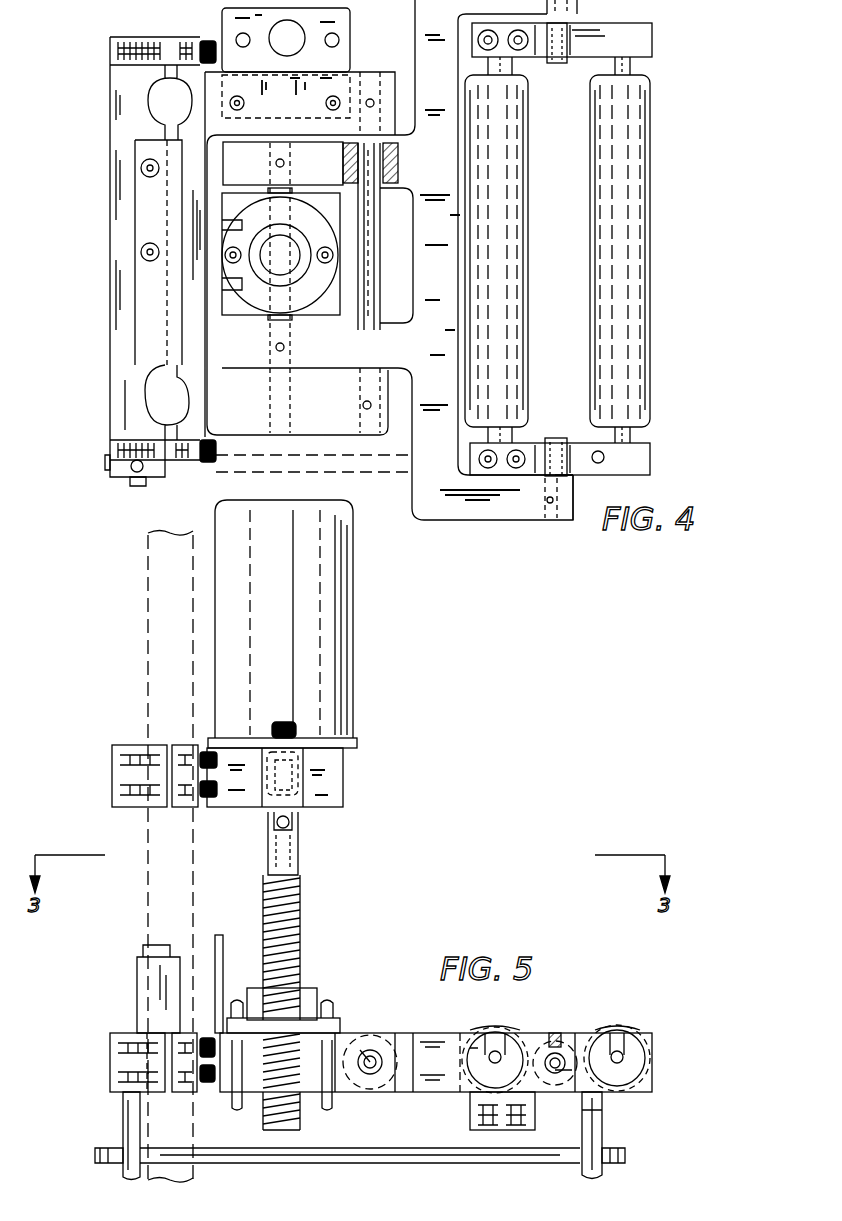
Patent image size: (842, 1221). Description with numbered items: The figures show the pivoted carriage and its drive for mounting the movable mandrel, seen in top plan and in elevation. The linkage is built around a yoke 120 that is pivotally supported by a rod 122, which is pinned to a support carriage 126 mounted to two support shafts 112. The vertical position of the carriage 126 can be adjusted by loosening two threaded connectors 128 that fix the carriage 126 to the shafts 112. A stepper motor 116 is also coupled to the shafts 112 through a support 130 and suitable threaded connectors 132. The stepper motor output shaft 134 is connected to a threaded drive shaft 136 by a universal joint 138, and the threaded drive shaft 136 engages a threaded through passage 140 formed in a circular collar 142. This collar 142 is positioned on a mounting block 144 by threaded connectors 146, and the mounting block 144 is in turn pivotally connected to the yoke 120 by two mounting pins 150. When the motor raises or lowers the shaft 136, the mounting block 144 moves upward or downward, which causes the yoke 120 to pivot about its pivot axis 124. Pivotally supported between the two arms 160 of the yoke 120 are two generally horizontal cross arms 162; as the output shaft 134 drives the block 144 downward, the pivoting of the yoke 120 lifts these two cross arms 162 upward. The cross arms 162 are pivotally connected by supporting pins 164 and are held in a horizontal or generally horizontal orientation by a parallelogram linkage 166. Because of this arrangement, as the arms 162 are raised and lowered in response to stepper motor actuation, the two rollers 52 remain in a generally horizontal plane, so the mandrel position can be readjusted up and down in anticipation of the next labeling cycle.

In FIG. 4, the rollers 52 is at (510, 257).
In FIG. 5, the rollers 52 is at (500, 1030).
In FIG. 5, the support shafts 112 is at (170, 613).
In FIG. 5, the stepper motor 116 is at (315, 595).
In FIG. 4, the yoke 120 is at (417, 507).
In FIG. 4, the rod 122 is at (400, 183).
In FIG. 4, the pivot axis 124 is at (122, 303).
In FIG. 5, the pivot axis 124 is at (395, 1036).
In FIG. 4, the support carriage 126 is at (312, 84).
In FIG. 4, the threaded connectors 128 is at (204, 45).
In FIG. 5, the threaded connectors 128 is at (200, 1040).
In FIG. 5, the support 130 is at (325, 780).
In FIG. 5, the threaded connectors 132 is at (213, 742).
In FIG. 5, the stepper motor output shaft 134 is at (340, 765).
In FIG. 5, the threaded drive shaft 136 is at (303, 938).
In FIG. 5, the universal joint 138 is at (302, 822).
In FIG. 4, the threaded through passage 140 is at (295, 250).
In FIG. 4, the circular collar 142 is at (300, 300).
In FIG. 4, the mounting block 144 is at (340, 305).
In FIG. 4, the threaded connectors 146 is at (335, 256).
In FIG. 5, the threaded connectors 146 is at (328, 1016).
In FIG. 4, the mounting pins 150 is at (275, 180).
In FIG. 4, the arms 160 is at (565, 505).
In FIG. 4, the cross arms 162 is at (640, 42).
In FIG. 4, the supporting pins 164 is at (560, 63).
In FIG. 5, the parallelogram linkage 166 is at (630, 1152).